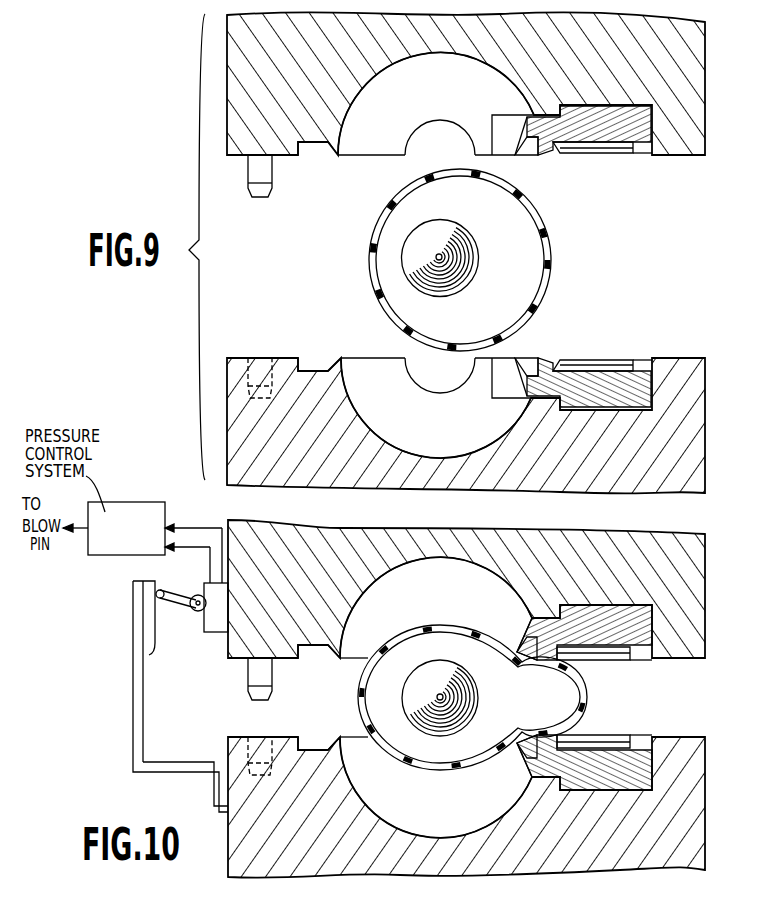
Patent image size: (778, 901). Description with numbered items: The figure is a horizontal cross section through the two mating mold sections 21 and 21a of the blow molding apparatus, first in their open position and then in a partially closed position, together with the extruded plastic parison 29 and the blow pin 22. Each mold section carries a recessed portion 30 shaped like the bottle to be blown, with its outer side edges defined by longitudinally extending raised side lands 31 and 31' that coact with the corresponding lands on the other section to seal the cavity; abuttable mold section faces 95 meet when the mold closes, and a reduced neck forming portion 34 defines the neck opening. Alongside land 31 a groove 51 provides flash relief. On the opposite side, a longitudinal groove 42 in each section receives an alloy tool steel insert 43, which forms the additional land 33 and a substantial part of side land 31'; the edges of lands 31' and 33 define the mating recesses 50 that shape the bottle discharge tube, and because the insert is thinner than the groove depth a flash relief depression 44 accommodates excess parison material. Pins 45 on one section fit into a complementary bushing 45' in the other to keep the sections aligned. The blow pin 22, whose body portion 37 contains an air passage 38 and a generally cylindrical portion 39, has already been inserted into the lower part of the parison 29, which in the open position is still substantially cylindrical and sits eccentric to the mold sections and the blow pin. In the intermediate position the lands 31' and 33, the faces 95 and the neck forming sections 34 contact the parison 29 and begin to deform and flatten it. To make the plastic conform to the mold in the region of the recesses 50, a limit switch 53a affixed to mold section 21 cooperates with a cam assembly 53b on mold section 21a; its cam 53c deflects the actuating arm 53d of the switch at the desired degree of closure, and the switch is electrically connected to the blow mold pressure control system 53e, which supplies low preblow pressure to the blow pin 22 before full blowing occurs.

In FIG. 9, the mold section 21 is at (690, 72).
In FIG. 10, the mold section 21 is at (690, 592).
In FIG. 9, the complementary mold section 21a is at (692, 439).
In FIG. 10, the complementary mold section 21a is at (690, 793).
In FIG. 9, the groove 42 is at (652, 126).
In FIG. 10, the groove 42 is at (652, 629).
In FIG. 9, the alignment pin 45 is at (245, 176).
In FIG. 10, the alignment pin 45 is at (242, 679).
In FIG. 9, the bushing 45' is at (254, 358).
In FIG. 10, the bushing 45' is at (247, 742).
In FIG. 9, the flash relief groove 51 is at (309, 150).
In FIG. 10, the flash relief groove 51 is at (308, 651).
In FIG. 9, the recessed portion 30 is at (358, 149).
In FIG. 10, the recessed portion 30 is at (454, 592).
In FIG. 9, the abuttable mold section face 95 is at (385, 158).
In FIG. 10, the abuttable mold section face 95 is at (355, 653).
In FIG. 9, the neck forming portion 34 is at (418, 129).
In FIG. 9, the land 33 is at (522, 157).
In FIG. 10, the land 33 is at (521, 647).
In FIG. 9, the mating recess 50 is at (535, 152).
In FIG. 10, the mating recess 50 is at (522, 666).
In FIG. 9, the side land 31' is at (590, 256).
In FIG. 10, the side land 31' is at (582, 697).
In FIG. 9, the side land 31 is at (340, 345).
In FIG. 10, the side land 31 is at (329, 697).
In FIG. 9, the alloy tool steel insert 43 is at (635, 146).
In FIG. 10, the alloy tool steel insert 43 is at (618, 633).
In FIG. 9, the flash relief depression 44 is at (645, 144).
In FIG. 10, the flash relief depression 44 is at (640, 652).
In FIG. 9, the parison 29 is at (551, 246).
In FIG. 10, the parison 29 is at (472, 697).
In FIG. 9, the body portion 37 is at (413, 273).
In FIG. 10, the body portion 37 is at (440, 698).
In FIG. 9, the air passage 38 is at (442, 257).
In FIG. 10, the air passage 38 is at (441, 697).
In FIG. 9, the cylindrical portion 39 is at (460, 248).
In FIG. 10, the cylindrical portion 39 is at (414, 698).
In FIG. 9, the blow pin 22 is at (458, 292).
In FIG. 10, the blow pin 22 is at (252, 641).
In FIG. 10, the limit switch 53a is at (215, 621).
In FIG. 10, the cam assembly 53b is at (134, 658).
In FIG. 10, the cam 53c is at (150, 650).
In FIG. 10, the actuating arm 53d is at (182, 595).
In FIG. 10, the blow mold pressure control system 53e is at (113, 486).